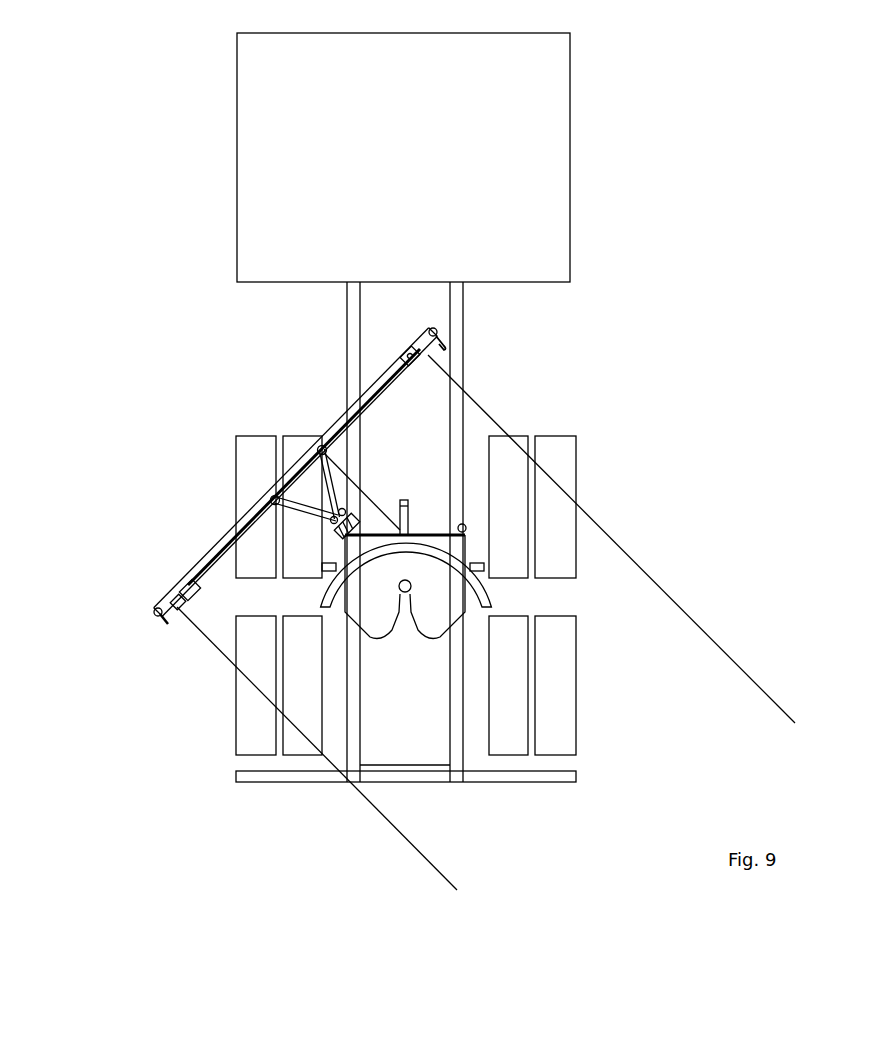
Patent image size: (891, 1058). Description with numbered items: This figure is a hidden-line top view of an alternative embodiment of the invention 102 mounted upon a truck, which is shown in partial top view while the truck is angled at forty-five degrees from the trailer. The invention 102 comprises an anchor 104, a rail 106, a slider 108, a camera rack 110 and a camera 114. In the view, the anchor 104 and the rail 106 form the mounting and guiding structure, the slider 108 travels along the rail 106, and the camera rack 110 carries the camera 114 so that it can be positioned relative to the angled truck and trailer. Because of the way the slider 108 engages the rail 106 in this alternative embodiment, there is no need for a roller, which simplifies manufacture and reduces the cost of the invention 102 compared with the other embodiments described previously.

The invention 102 is at (511, 561).
The anchor 104 is at (289, 469).
The rail 106 is at (492, 597).
The slider 108 is at (333, 521).
The camera rack 110 is at (192, 576).
The camera 114 is at (440, 331).